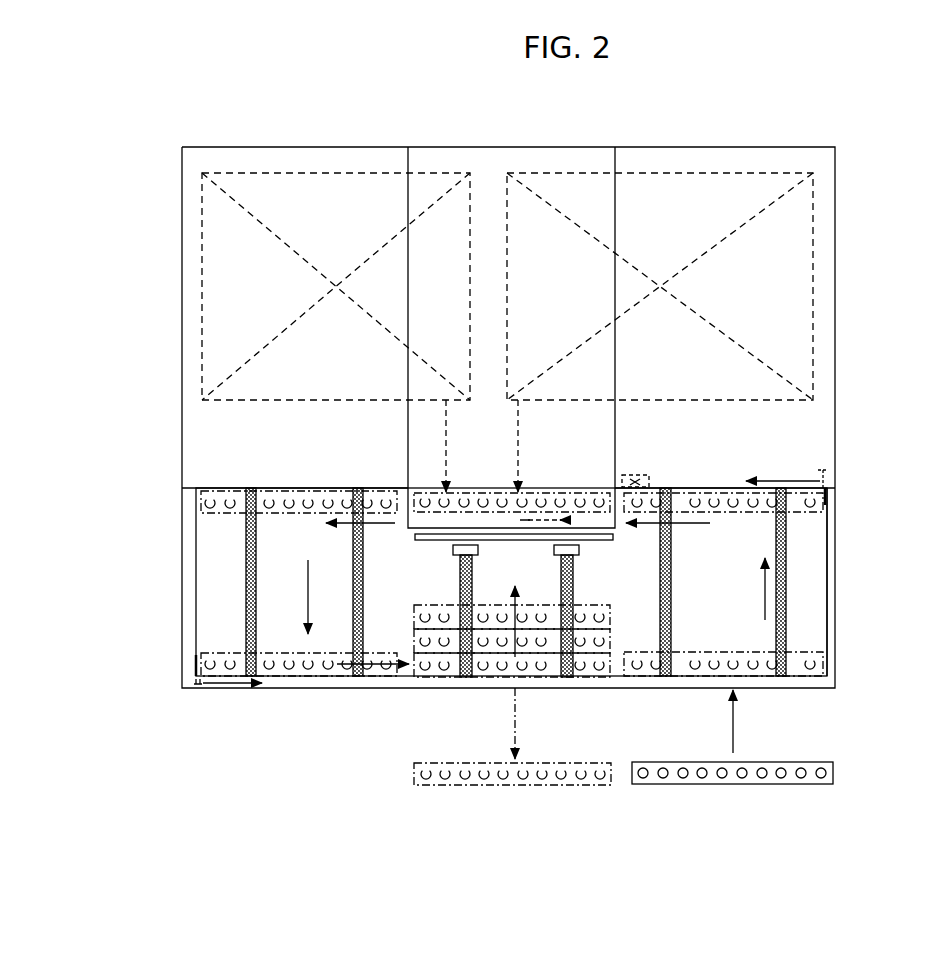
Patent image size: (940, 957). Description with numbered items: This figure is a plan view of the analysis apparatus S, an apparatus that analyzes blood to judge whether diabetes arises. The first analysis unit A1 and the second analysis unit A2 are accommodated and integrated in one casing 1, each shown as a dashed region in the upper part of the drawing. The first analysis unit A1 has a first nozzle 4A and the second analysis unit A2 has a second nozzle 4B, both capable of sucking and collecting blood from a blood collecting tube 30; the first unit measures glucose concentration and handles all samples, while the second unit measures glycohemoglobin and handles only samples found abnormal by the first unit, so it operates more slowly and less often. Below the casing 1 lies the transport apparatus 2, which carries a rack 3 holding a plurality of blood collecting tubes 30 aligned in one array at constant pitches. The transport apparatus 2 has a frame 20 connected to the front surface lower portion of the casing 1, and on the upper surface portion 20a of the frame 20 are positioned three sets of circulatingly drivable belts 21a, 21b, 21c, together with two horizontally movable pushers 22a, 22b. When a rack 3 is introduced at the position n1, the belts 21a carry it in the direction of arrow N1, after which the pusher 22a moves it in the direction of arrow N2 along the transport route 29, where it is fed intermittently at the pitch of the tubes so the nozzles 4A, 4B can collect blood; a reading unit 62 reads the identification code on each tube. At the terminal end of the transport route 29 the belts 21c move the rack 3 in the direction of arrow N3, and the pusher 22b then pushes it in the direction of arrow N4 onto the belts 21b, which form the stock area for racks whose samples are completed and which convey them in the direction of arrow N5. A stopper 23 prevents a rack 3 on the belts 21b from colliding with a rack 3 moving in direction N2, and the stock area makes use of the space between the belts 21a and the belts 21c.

The casing 1 is at (835, 400).
The transport apparatus 2 is at (840, 676).
The rack 3 is at (222, 515).
The first nozzle 4A is at (528, 494).
The second nozzle 4B is at (453, 494).
The frame 20 is at (823, 688).
The upper surface portion 20a is at (810, 583).
The belts 21a is at (786, 640).
The belts 21b is at (573, 585).
The belts 21c is at (256, 544).
The pusher 22a is at (828, 497).
The pusher 22b is at (196, 663).
The stopper 23 is at (614, 538).
The transport route 29 is at (428, 490).
The blood collecting tube 30 is at (426, 780).
The reading unit 62 is at (641, 476).
The introduction position n1 is at (807, 665).
The analysis apparatus S is at (299, 131).
The first analysis unit A1 is at (746, 172).
The second analysis unit A2 is at (364, 172).
The arrow N1 is at (776, 617).
The arrow N2 is at (518, 536).
The arrow N3 is at (255, 621).
The arrow N4 is at (375, 660).
The arrow N5 is at (515, 612).